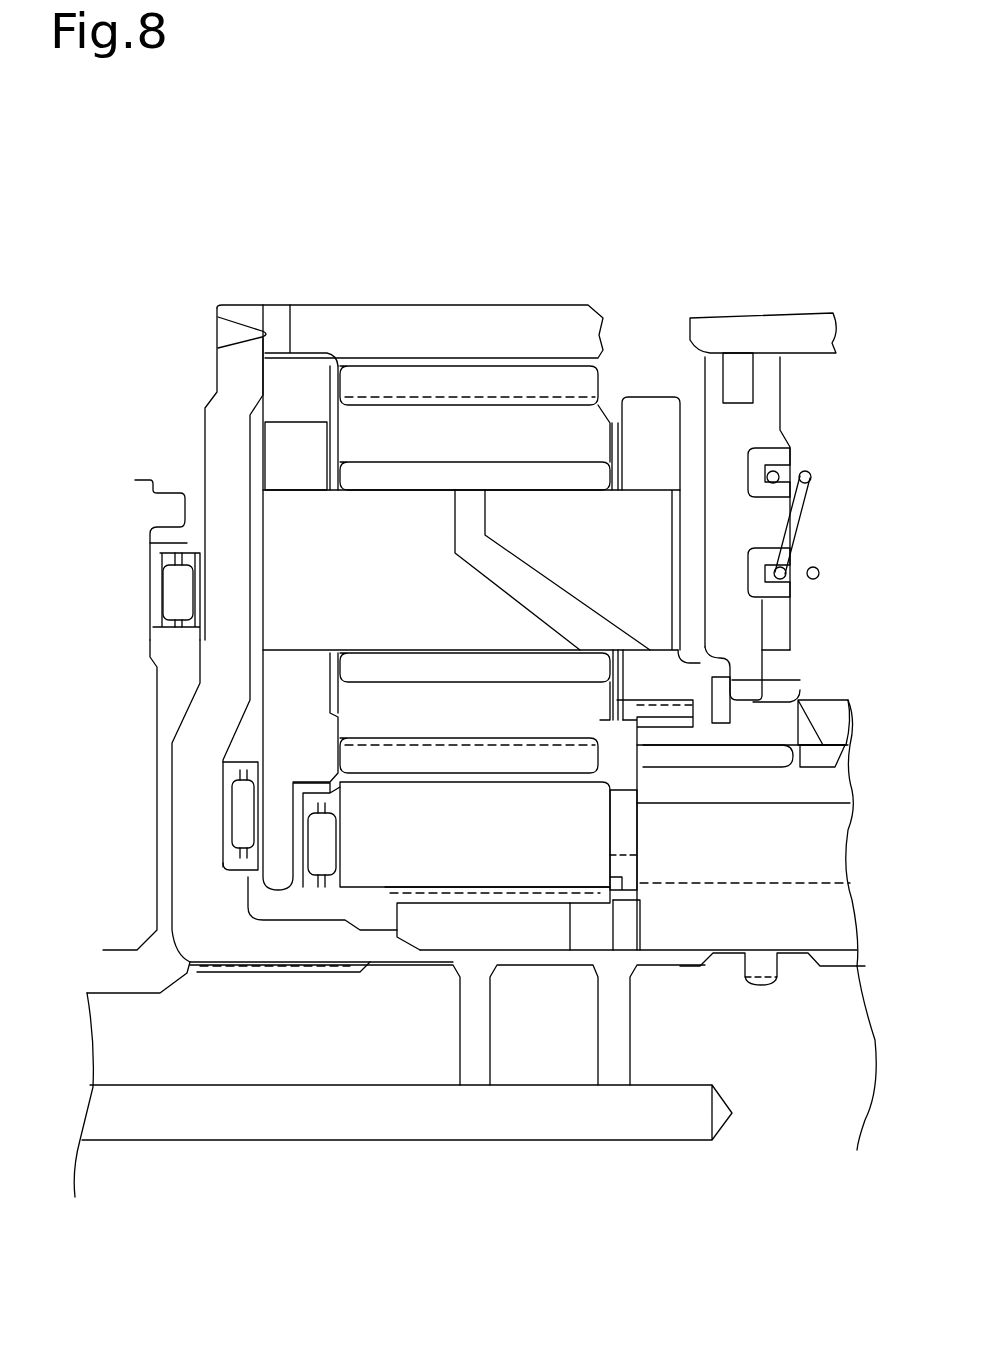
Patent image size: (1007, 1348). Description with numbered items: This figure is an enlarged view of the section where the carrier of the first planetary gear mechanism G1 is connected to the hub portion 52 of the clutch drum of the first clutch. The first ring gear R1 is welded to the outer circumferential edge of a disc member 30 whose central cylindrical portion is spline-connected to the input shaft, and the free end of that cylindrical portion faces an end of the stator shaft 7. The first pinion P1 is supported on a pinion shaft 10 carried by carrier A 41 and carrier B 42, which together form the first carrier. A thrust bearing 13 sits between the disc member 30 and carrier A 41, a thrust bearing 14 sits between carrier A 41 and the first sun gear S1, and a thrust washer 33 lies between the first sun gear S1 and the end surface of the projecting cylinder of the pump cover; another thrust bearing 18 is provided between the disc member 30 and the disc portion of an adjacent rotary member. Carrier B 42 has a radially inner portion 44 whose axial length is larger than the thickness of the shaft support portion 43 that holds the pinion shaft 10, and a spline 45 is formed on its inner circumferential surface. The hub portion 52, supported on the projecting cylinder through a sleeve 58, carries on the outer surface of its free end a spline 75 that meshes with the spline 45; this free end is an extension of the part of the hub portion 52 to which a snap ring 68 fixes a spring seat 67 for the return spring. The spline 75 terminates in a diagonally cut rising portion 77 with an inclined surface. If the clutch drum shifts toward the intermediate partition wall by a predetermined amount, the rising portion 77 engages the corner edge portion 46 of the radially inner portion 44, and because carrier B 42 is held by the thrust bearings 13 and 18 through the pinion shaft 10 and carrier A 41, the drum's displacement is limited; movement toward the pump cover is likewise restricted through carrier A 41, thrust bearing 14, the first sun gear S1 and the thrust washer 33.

The first ring gear R1 is at (472, 320).
The first pinion P1 is at (413, 420).
The first planetary gear mechanism G1 is at (520, 283).
The first sun gear S1 is at (492, 842).
The stator shaft 7 is at (843, 920).
The pinion shaft 10 is at (780, 523).
The thrust bearing 13 is at (242, 818).
The thrust bearing 14 is at (325, 855).
The thrust bearing 18 is at (185, 597).
The disc member 30 is at (210, 933).
The thrust washer 33 is at (640, 883).
The carrier A 41 is at (285, 437).
The carrier B 42 is at (640, 398).
The shaft support portion 43 is at (703, 428).
The radially inner portion 44 is at (687, 675).
The spline 45 is at (638, 710).
The corner edge portion 46 is at (707, 700).
The hub portion 52 is at (843, 707).
The sleeve 58 is at (845, 773).
The spring seat 67 is at (792, 438).
The snap ring 68 is at (730, 723).
The spline 75 is at (645, 700).
The diagonally cut rising portion 77 is at (700, 693).